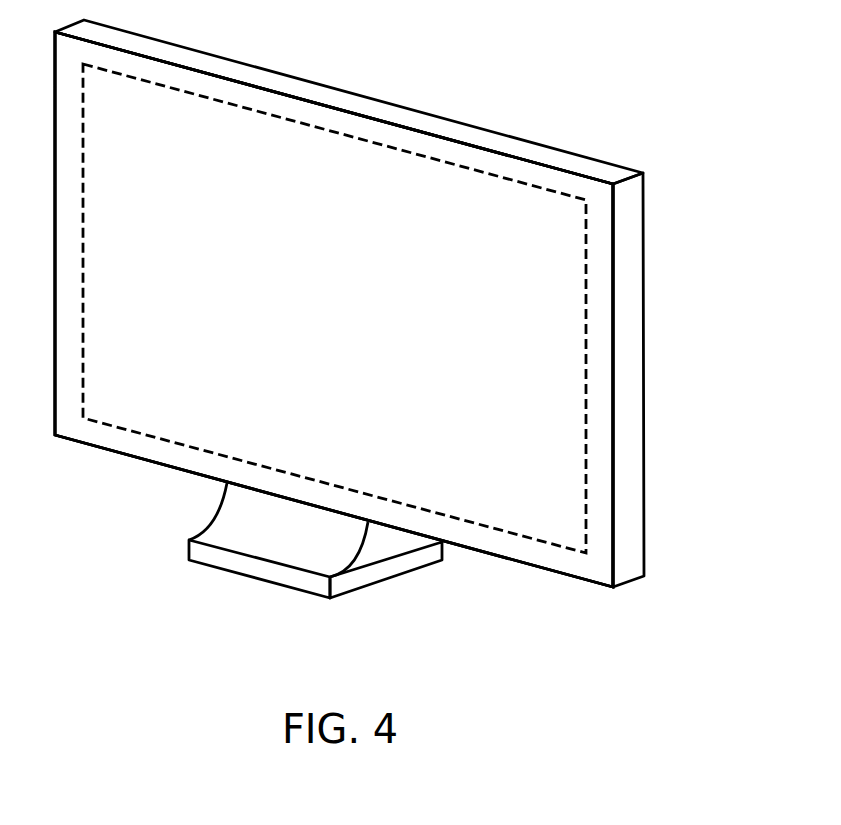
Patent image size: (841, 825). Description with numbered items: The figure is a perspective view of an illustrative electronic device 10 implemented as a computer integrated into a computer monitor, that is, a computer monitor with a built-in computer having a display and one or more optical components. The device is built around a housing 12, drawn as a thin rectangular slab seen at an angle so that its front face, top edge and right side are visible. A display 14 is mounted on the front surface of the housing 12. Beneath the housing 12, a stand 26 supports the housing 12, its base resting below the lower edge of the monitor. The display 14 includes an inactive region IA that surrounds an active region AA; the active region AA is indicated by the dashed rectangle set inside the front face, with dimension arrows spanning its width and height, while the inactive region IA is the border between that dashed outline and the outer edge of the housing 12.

The electronic device 10 is at (389, 299).
The housing 12 is at (628, 353).
The display 14 is at (565, 465).
The inactive region IA is at (593, 235).
The active region AA is at (83, 238).
The stand 26 is at (230, 530).